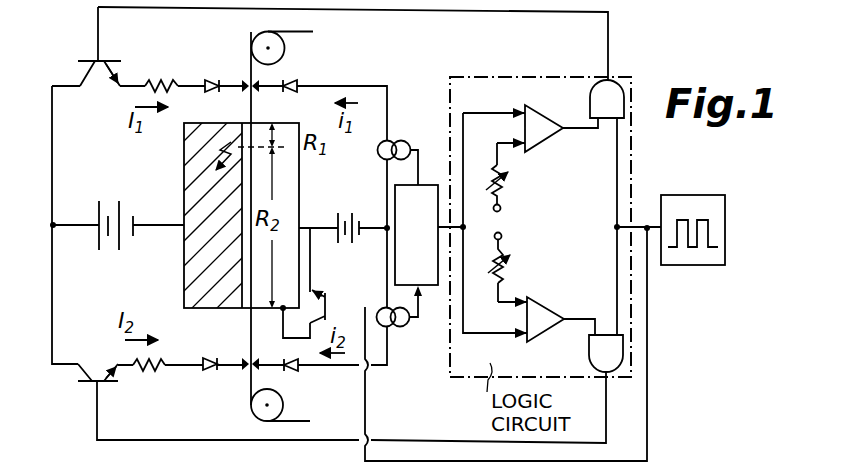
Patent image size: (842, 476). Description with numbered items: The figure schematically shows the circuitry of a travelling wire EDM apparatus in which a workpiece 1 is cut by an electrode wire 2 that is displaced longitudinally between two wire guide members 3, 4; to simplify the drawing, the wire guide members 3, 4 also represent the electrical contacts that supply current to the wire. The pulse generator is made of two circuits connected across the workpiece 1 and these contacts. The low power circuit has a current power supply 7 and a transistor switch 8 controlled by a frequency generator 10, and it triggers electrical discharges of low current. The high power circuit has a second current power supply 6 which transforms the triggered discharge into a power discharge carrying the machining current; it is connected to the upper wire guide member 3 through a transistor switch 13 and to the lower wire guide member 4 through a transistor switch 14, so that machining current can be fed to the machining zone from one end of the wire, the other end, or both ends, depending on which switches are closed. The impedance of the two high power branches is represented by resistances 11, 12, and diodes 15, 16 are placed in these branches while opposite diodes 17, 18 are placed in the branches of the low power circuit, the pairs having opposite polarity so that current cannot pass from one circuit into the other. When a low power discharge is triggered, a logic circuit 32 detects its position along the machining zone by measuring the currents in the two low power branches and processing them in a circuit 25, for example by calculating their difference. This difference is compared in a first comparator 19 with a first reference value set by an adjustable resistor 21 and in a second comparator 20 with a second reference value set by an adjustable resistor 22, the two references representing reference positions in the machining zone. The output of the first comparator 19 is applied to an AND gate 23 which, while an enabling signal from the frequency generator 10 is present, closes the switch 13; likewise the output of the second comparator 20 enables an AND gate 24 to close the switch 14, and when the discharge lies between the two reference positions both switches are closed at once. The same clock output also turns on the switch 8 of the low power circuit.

The workpiece 1 is at (200, 183).
The electrode wire 2 is at (249, 329).
The wire guide member 3 is at (246, 80).
The wire guide member 4 is at (246, 372).
The current power supply 6 is at (110, 255).
The current power supply 7 is at (352, 212).
The transistor switch 8 is at (330, 297).
The frequency generator 10 is at (697, 266).
The resistance 11 is at (166, 76).
The resistance 12 is at (152, 375).
The transistor switch 13 is at (92, 60).
The transistor switch 14 is at (90, 384).
The diode 15 is at (212, 78).
The diode 16 is at (212, 375).
The diode 17 is at (292, 78).
The diode 18 is at (294, 372).
The first comparator 19 is at (553, 130).
The second comparator 20 is at (552, 322).
The adjustable resistor 21 is at (505, 189).
The adjustable resistor 22 is at (512, 254).
The AND gate 23 is at (620, 82).
The AND gate 24 is at (625, 360).
The circuit 25 is at (428, 300).
The logic circuit 32 is at (509, 74).